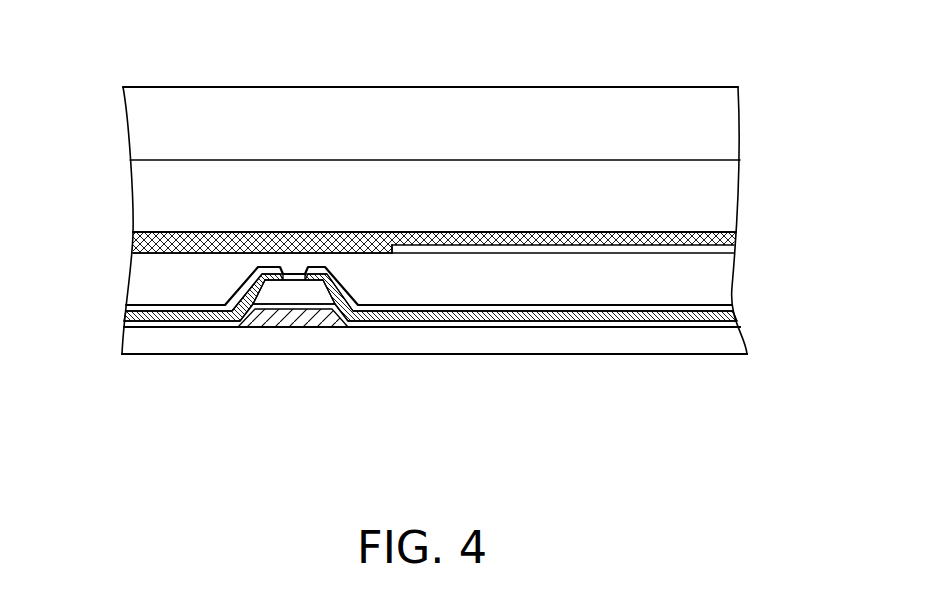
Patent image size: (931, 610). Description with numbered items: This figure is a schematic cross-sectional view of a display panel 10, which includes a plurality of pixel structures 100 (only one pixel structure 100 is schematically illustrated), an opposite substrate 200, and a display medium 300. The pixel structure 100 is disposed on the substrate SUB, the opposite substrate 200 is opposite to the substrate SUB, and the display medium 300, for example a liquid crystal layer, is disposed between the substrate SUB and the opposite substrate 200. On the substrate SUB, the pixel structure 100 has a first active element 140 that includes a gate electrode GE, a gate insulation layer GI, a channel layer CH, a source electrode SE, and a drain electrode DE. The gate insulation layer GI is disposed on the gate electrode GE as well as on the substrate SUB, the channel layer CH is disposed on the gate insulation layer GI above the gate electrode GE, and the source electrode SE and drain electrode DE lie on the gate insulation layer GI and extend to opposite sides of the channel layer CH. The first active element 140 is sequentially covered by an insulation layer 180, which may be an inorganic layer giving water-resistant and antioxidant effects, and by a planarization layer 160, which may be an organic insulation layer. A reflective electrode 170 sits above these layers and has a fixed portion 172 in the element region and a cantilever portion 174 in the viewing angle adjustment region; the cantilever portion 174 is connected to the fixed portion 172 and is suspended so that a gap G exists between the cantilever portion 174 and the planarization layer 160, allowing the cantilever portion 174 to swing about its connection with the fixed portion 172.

The display panel 10 is at (776, 440).
The pixel structure 100 is at (119, 233).
The opposite substrate 200 is at (119, 88).
The display medium 300 is at (119, 160).
The reflective electrode 170 is at (434, 126).
The fixed portion 172 is at (368, 248).
The cantilever portion 174 is at (440, 232).
The gap G is at (724, 250).
The planarization layer 160 is at (727, 277).
The insulation layer 180 is at (730, 308).
The substrate SUB is at (728, 342).
The first active element 140 is at (430, 370).
The source electrode SE is at (201, 321).
The gate electrode GE is at (272, 317).
The channel layer CH is at (295, 288).
The drain electrode DE is at (521, 345).
The gate insulation layer GI is at (403, 323).